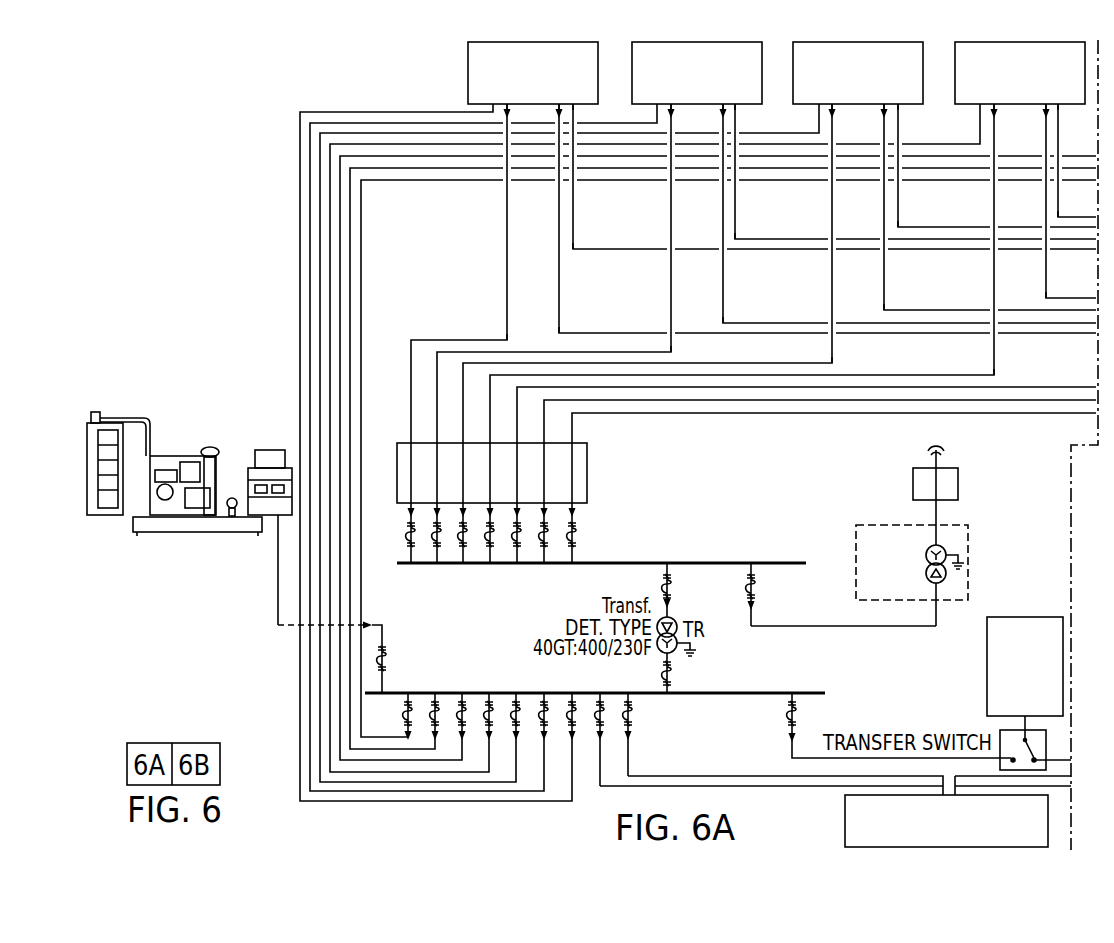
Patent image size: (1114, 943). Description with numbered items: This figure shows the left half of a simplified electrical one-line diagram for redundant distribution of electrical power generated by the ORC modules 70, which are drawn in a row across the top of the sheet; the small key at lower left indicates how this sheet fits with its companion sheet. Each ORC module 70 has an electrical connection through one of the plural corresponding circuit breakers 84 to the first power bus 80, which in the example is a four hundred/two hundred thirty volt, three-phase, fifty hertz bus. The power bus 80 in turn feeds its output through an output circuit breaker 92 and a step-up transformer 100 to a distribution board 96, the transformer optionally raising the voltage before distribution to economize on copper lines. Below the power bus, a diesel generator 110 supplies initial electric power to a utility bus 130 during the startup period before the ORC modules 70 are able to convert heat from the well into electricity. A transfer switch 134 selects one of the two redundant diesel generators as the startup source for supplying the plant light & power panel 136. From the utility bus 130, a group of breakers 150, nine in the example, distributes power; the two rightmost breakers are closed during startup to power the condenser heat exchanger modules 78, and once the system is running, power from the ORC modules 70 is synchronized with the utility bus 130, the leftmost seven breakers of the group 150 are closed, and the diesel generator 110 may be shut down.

The ORC module 70 is at (468, 62).
The diesel generator 110 is at (156, 404).
The circuit breakers 84 is at (592, 544).
The first power bus 80 is at (704, 562).
The output circuit breaker 92 is at (744, 606).
The distribution board 96 is at (952, 444).
The step-up transformer 100 is at (880, 600).
The plant light & power panel 136 is at (987, 651).
The transfer switch 134 is at (1000, 730).
The utility bus 130 is at (702, 695).
The group of breakers 150 is at (650, 732).
The condenser heat exchanger modules 78 is at (845, 812).